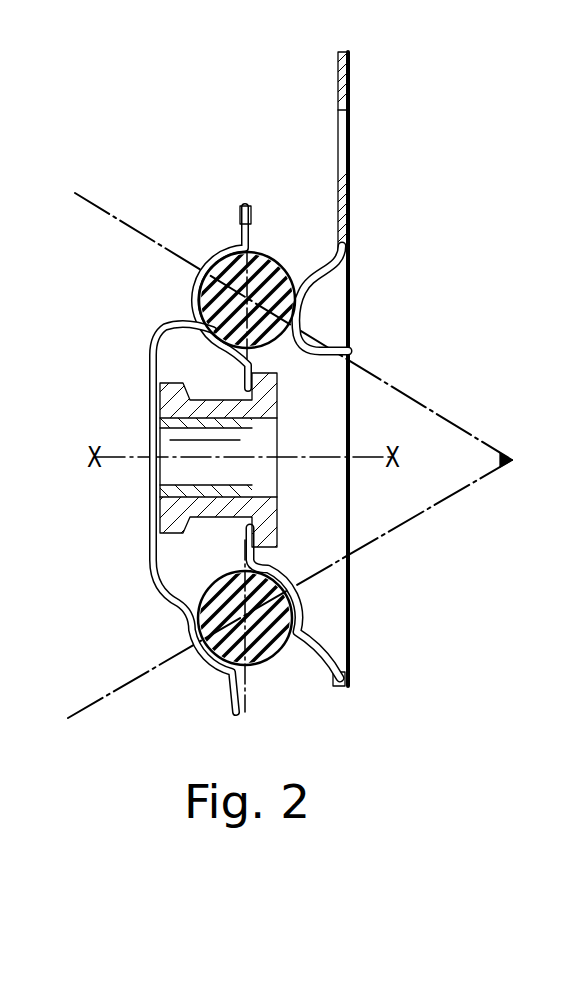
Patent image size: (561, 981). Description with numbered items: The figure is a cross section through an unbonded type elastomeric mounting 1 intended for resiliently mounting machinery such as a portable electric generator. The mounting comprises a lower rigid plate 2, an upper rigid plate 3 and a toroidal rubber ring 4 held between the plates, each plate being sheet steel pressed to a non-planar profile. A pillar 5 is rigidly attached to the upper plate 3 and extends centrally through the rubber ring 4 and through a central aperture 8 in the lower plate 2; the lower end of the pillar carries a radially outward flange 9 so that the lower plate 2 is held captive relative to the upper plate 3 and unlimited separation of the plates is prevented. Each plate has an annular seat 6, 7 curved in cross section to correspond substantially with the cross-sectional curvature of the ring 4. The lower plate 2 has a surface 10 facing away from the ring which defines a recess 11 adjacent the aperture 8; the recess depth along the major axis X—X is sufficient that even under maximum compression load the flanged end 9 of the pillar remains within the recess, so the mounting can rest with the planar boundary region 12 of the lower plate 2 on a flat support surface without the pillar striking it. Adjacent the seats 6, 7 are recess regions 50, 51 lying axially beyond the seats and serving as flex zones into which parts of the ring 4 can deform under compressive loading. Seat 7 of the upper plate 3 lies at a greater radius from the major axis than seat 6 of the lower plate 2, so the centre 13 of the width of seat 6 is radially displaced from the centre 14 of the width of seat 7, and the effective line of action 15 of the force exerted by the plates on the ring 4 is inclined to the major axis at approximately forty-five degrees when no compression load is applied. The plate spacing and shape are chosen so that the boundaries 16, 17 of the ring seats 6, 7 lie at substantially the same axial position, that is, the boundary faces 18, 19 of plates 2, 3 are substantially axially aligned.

The elastomeric mounting 1 is at (118, 600).
The lower rigid plate 2 is at (352, 240).
The upper rigid plate 3 is at (148, 562).
The toroidal rubber ring 4 is at (272, 655).
The pillar 5 is at (160, 476).
The annular seat 6 is at (318, 309).
The annular seat 7 is at (222, 262).
The central aperture 8 is at (246, 543).
The flange 9 is at (268, 536).
The surface 10 is at (332, 353).
The recess 11 is at (333, 449).
The planar boundary region 12 is at (347, 80).
The centre of the width of seat 6 13 is at (300, 318).
The centre of the width of seat 7 14 is at (198, 278).
The effective line of action 15 is at (117, 216).
The boundary of ring seat 16 is at (254, 570).
The boundary of ring seat 17 is at (228, 690).
The boundary face 18 is at (236, 378).
The boundary face 19 is at (252, 222).
The recess region 50 is at (296, 260).
The recess region 51 is at (190, 333).